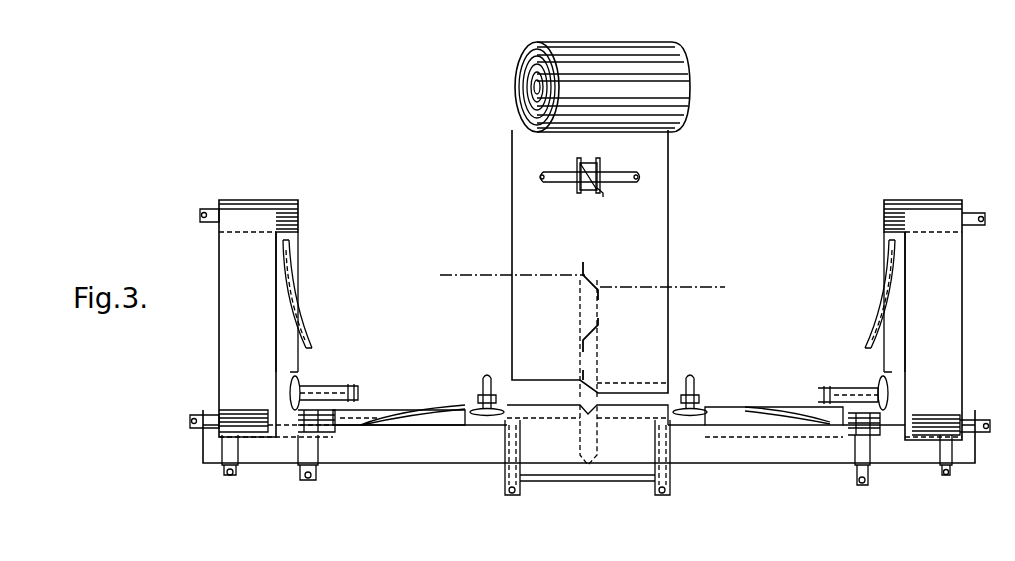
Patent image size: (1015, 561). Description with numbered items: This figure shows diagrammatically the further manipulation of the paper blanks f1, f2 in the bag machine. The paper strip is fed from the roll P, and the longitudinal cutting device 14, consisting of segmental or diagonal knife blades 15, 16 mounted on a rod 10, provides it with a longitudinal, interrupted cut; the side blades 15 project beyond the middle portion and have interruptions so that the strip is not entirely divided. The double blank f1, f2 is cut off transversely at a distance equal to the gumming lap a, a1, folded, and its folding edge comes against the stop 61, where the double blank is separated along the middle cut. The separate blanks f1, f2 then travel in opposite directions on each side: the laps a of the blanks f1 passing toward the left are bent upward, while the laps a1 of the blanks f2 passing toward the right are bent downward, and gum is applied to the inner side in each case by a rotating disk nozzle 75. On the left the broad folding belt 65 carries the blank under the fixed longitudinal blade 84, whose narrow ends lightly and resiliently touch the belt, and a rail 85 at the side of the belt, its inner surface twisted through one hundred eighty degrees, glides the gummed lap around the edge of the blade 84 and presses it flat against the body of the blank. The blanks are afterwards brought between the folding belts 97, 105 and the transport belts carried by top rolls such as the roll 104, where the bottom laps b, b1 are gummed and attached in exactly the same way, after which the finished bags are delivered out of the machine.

The folding belt 97 is at (254, 340).
The folding belt 105 is at (922, 342).
The top roll 104 is at (965, 230).
The rail 85 is at (312, 344).
The longitudinal blade 84 is at (278, 355).
The rotating disk nozzle 75 is at (313, 388).
The folding belt 65 is at (366, 437).
The stop 61 is at (590, 482).
The rod 10 is at (617, 171).
The longitudinal cutting device 14 is at (595, 162).
The side knife blades 15 is at (578, 162).
The knife blade 16 is at (580, 192).
The roll P is at (602, 87).
The side lap a is at (582, 270).
The side lap a1 is at (587, 408).
The bottom lap b is at (587, 435).
The bottom lap b1 is at (570, 437).
The blank f1 is at (547, 437).
The blank f2 is at (620, 437).